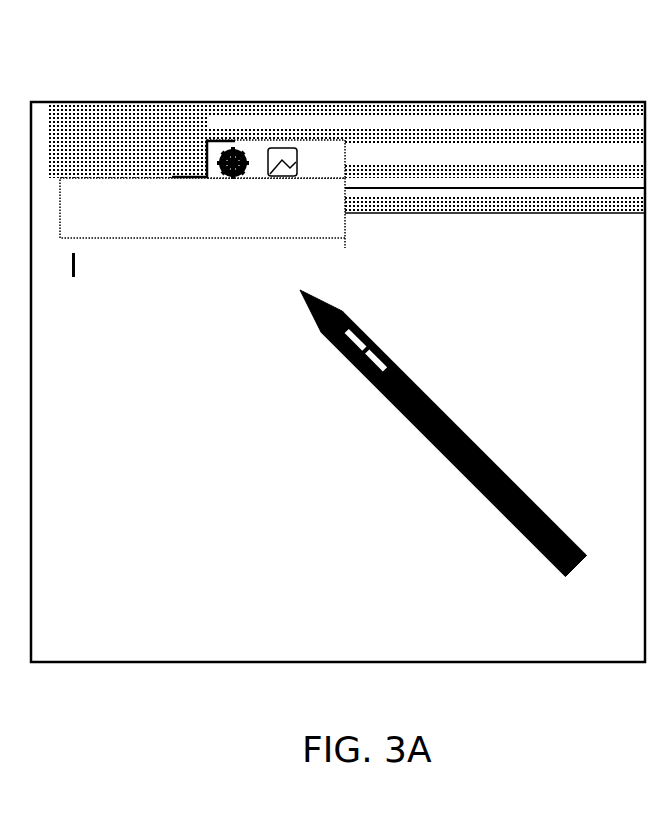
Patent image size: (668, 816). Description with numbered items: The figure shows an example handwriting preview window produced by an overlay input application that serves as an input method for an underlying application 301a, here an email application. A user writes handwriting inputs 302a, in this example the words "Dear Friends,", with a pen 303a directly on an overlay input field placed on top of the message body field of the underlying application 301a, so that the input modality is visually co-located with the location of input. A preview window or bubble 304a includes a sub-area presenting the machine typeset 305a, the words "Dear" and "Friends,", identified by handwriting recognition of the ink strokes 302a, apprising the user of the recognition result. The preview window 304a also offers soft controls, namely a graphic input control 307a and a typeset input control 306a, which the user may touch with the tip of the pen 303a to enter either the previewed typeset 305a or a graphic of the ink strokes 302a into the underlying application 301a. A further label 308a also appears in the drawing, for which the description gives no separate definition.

The underlying application 301a is at (446, 280).
The handwriting inputs 302a is at (172, 308).
The pen 303a is at (435, 443).
The preview window 304a is at (208, 126).
The machine typeset 305a is at (177, 190).
The typeset input control 306a is at (313, 148).
The graphic input control 307a is at (273, 150).
The text input field 308a is at (292, 224).